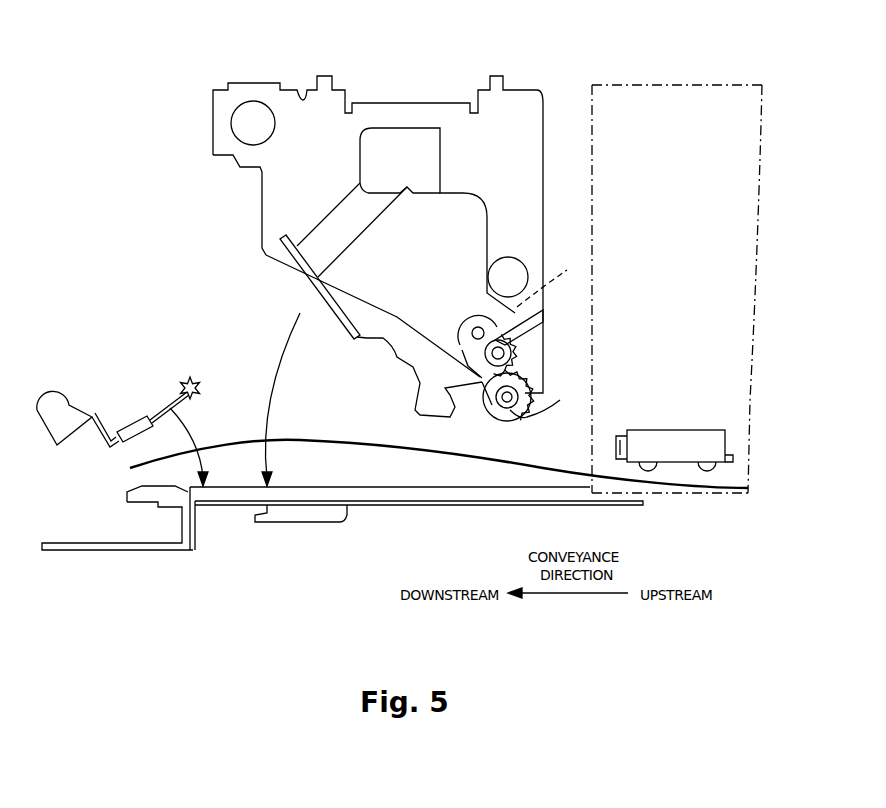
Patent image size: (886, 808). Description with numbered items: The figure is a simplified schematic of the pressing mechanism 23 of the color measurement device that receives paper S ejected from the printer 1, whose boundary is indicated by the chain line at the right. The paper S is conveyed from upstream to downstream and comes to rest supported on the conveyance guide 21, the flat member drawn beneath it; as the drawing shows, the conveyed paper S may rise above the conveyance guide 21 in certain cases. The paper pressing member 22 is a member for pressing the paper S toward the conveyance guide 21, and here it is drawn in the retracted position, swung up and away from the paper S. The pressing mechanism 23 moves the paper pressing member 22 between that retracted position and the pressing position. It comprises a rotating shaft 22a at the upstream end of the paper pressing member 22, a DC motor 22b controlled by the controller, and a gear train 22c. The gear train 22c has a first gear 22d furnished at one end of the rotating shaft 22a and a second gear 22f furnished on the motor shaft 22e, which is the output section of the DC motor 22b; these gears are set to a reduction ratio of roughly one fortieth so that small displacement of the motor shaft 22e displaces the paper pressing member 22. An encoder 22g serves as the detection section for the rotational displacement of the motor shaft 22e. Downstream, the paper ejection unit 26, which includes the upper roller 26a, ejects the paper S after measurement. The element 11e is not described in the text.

The printer 1 is at (684, 83).
The pressing mechanism 23 is at (561, 211).
The paper pressing member 22 is at (297, 256).
The encoder 22g is at (484, 328).
The motor shaft 22e is at (507, 342).
The DC motor 22b is at (527, 340).
The gear train 22c is at (533, 356).
The second gear 22f is at (527, 362).
The rotating shaft 22a is at (540, 417).
The first gear 22d is at (492, 407).
The paper S is at (543, 468).
The conveyance guide 21 is at (315, 492).
The paper ejection unit 26 is at (71, 391).
The upper roller 26a is at (197, 380).
The carriage / cart unit 11e is at (716, 413).